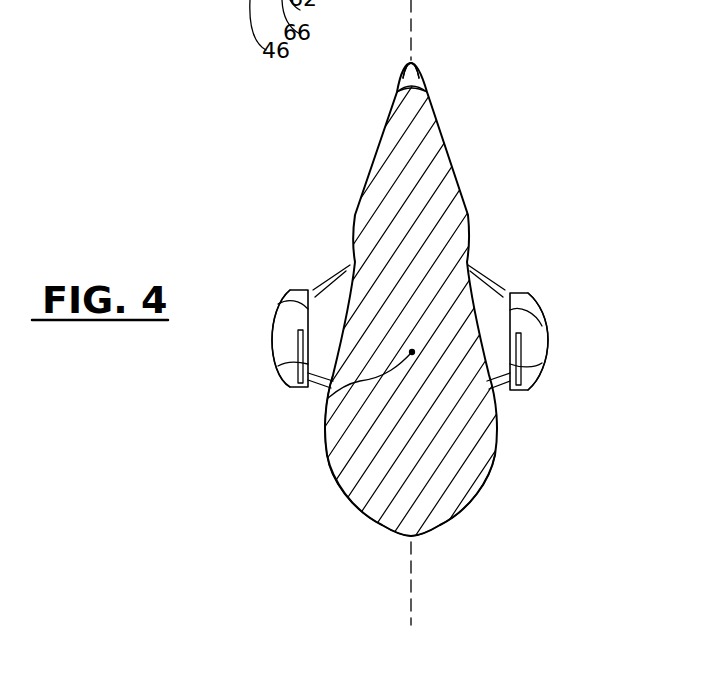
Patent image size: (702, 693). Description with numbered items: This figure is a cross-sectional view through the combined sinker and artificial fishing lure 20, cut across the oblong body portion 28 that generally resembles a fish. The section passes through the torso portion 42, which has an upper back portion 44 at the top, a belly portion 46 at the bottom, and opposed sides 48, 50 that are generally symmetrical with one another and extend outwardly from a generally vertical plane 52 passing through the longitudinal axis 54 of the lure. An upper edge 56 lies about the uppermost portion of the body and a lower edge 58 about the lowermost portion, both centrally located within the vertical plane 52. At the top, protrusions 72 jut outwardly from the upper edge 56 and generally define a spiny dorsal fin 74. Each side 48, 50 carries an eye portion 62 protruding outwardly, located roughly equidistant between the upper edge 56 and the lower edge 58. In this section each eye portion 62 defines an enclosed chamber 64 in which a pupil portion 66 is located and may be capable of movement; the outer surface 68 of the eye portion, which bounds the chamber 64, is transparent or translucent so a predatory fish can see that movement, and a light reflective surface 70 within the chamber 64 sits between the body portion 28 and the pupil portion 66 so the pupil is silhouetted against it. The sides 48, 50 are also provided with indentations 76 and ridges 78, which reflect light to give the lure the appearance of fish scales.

The combined sinker and artificial fishing lure 20 is at (213, 448).
The oblong body portion 28 is at (470, 212).
The torso portion 42 is at (480, 303).
The upper back portion 44 is at (426, 88).
The belly portion 46 is at (420, 535).
The opposed side 48 is at (323, 440).
The opposed side 50 is at (497, 427).
The vertical plane 52 is at (413, 27).
The longitudinal axis 54 is at (324, 427).
The upper edge 56 is at (398, 93).
The lower edge 58 is at (411, 534).
The eye portion 62 is at (267, 365).
The enclosed chamber 64 is at (281, 326).
The pupil portion 66 is at (282, 370).
The outer surface 68 is at (273, 347).
The light reflective surface 70 is at (300, 305).
The protrusions 72 is at (407, 64).
The spiny dorsal fin 74 is at (418, 66).
The indentations 76 is at (350, 265).
The ridges 78 is at (356, 218).